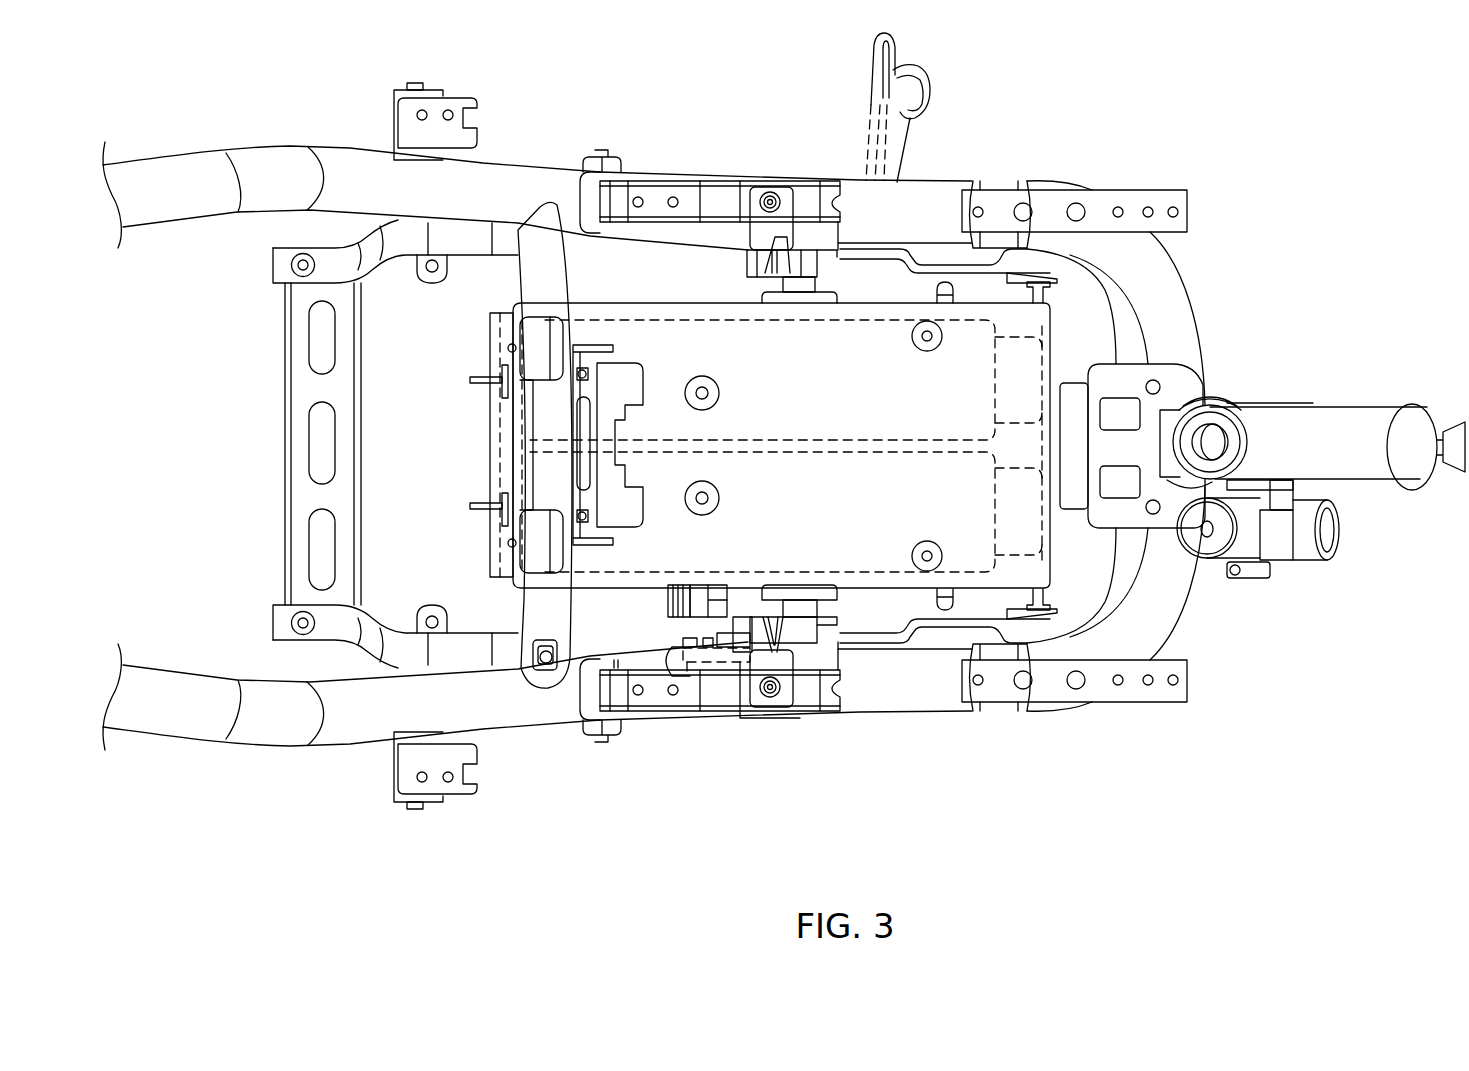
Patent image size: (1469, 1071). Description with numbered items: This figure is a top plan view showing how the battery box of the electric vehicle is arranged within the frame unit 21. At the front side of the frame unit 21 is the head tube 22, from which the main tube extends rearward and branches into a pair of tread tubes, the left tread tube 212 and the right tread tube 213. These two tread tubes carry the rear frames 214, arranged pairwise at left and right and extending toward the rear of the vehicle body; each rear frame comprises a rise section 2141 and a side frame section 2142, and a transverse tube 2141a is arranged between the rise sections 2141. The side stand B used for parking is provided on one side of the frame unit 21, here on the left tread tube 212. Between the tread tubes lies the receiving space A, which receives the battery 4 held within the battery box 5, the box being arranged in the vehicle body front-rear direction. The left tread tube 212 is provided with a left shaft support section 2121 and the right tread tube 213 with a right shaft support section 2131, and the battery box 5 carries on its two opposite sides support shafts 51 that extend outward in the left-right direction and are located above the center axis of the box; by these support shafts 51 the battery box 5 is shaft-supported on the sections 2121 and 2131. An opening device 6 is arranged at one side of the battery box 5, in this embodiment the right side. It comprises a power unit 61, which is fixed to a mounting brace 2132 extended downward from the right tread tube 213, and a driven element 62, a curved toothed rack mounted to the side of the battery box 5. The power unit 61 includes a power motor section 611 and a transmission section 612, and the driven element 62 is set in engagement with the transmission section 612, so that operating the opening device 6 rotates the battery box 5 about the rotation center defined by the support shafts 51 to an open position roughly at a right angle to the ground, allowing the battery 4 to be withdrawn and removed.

The frame unit 21 is at (1095, 166).
The left tread tube 212 is at (877, 210).
The left shaft support section 2121 is at (808, 260).
The right tread tube 213 is at (936, 683).
The right shaft support section 2131 is at (812, 631).
The mounting brace 2132 is at (940, 263).
The rear frames 214 is at (267, 133).
The rise sections 2141 is at (367, 170).
The transverse tube 2141a is at (560, 279).
The side frame sections 2142 is at (182, 168).
The head tube 22 is at (1370, 457).
The battery 4 is at (967, 338).
The battery box 5 is at (673, 303).
The support shafts 51 is at (770, 287).
The opening device 6 is at (757, 727).
The power unit 61 is at (720, 824).
The power motor section 611 is at (615, 662).
The transmission section 612 is at (727, 680).
The driven element 62 is at (668, 596).
The receiving space A is at (1084, 322).
The side stand B is at (918, 86).